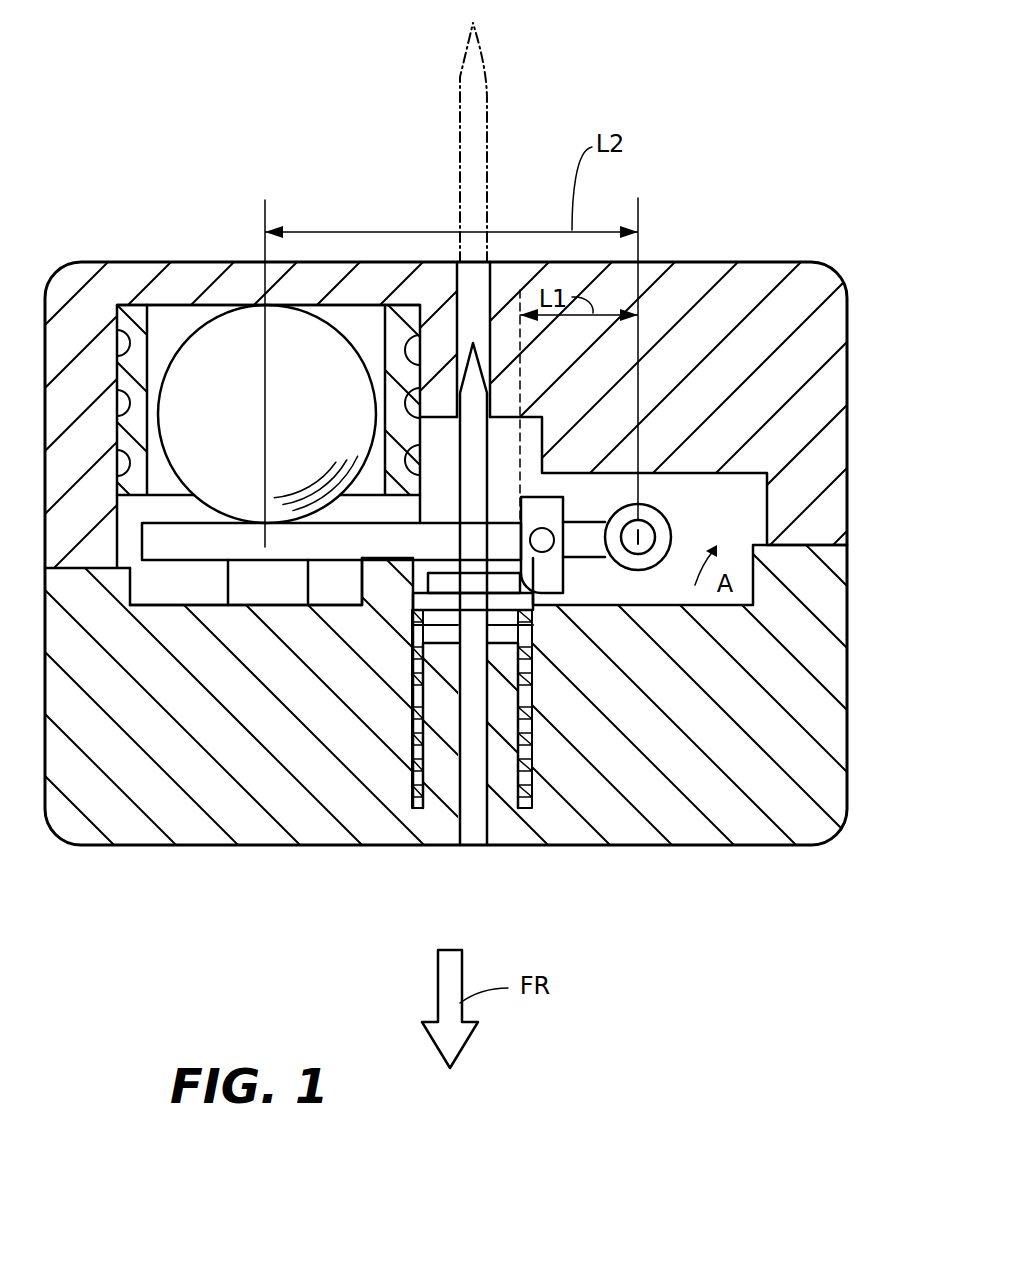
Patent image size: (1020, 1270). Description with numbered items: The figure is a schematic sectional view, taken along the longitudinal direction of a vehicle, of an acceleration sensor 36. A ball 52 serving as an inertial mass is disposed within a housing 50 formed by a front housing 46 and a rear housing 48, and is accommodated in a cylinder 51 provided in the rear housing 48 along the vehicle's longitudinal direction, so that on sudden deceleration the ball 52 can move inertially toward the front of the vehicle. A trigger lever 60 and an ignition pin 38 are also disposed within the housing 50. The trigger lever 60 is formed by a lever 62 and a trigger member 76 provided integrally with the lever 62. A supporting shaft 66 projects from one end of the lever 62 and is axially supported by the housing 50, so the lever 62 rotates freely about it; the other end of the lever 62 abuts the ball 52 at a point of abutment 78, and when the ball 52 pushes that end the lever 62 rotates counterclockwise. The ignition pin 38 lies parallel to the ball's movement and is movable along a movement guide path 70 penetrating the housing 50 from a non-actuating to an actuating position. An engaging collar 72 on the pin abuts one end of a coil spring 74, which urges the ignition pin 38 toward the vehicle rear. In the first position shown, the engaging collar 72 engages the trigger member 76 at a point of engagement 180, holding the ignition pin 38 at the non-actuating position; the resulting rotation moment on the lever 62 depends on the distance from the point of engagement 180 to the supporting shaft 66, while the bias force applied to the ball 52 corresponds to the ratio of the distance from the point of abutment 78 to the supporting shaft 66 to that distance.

The acceleration sensor 36 is at (594, 70).
The ignition pin 38 is at (470, 95).
The front housing 46 is at (848, 708).
The rear housing 48 is at (782, 262).
The housing 50 is at (222, 262).
The cylinder 51 is at (135, 285).
The ball 52 is at (181, 414).
The trigger lever 60 is at (375, 543).
The lever 62 is at (273, 595).
The supporting shaft 66 is at (657, 538).
The movement guide path 70 is at (467, 272).
The engaging collar 72 is at (500, 600).
The coil spring 74 is at (532, 790).
The trigger member 76 is at (550, 563).
The point of abutment 78 is at (253, 607).
The point of engagement 180 is at (495, 585).